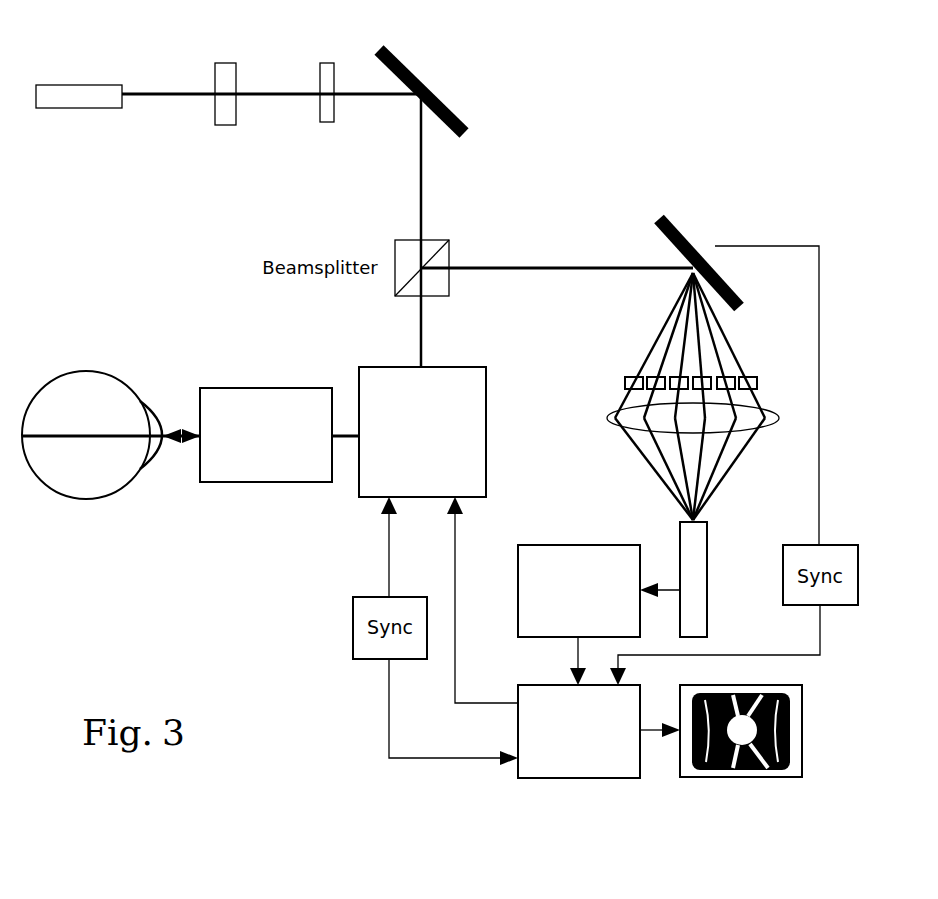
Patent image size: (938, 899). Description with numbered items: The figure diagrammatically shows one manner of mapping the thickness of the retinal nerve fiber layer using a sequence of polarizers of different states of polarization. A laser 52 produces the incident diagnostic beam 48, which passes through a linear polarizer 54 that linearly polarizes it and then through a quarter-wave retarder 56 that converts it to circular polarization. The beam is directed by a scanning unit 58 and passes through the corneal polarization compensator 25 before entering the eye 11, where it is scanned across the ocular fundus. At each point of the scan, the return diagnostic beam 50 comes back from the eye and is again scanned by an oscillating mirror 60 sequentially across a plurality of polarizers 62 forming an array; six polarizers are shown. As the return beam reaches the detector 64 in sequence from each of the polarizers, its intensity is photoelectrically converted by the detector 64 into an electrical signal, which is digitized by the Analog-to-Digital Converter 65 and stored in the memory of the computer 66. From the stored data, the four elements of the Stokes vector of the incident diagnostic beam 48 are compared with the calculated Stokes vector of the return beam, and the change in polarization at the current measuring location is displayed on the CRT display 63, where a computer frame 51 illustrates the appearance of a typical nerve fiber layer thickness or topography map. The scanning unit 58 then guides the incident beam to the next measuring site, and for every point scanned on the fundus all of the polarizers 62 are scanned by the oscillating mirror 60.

The eye 11 is at (88, 368).
The corneal polarization compensator 25 is at (290, 387).
The incident diagnostic beam 48 is at (390, 96).
The return diagnostic beam 50 is at (505, 268).
The computer frame 51 is at (790, 736).
The laser 52 is at (80, 88).
The linear polarizer 54 is at (226, 66).
The quarter-wave retarder 56 is at (327, 66).
The scanning unit 58 is at (480, 368).
The oscillating mirror 60 is at (665, 217).
The polarizers 62 is at (760, 378).
The CRT display 63 is at (774, 764).
The detector 64 is at (702, 607).
The Analog-to-Digital Converter 65 is at (578, 545).
The computer 66 is at (573, 779).